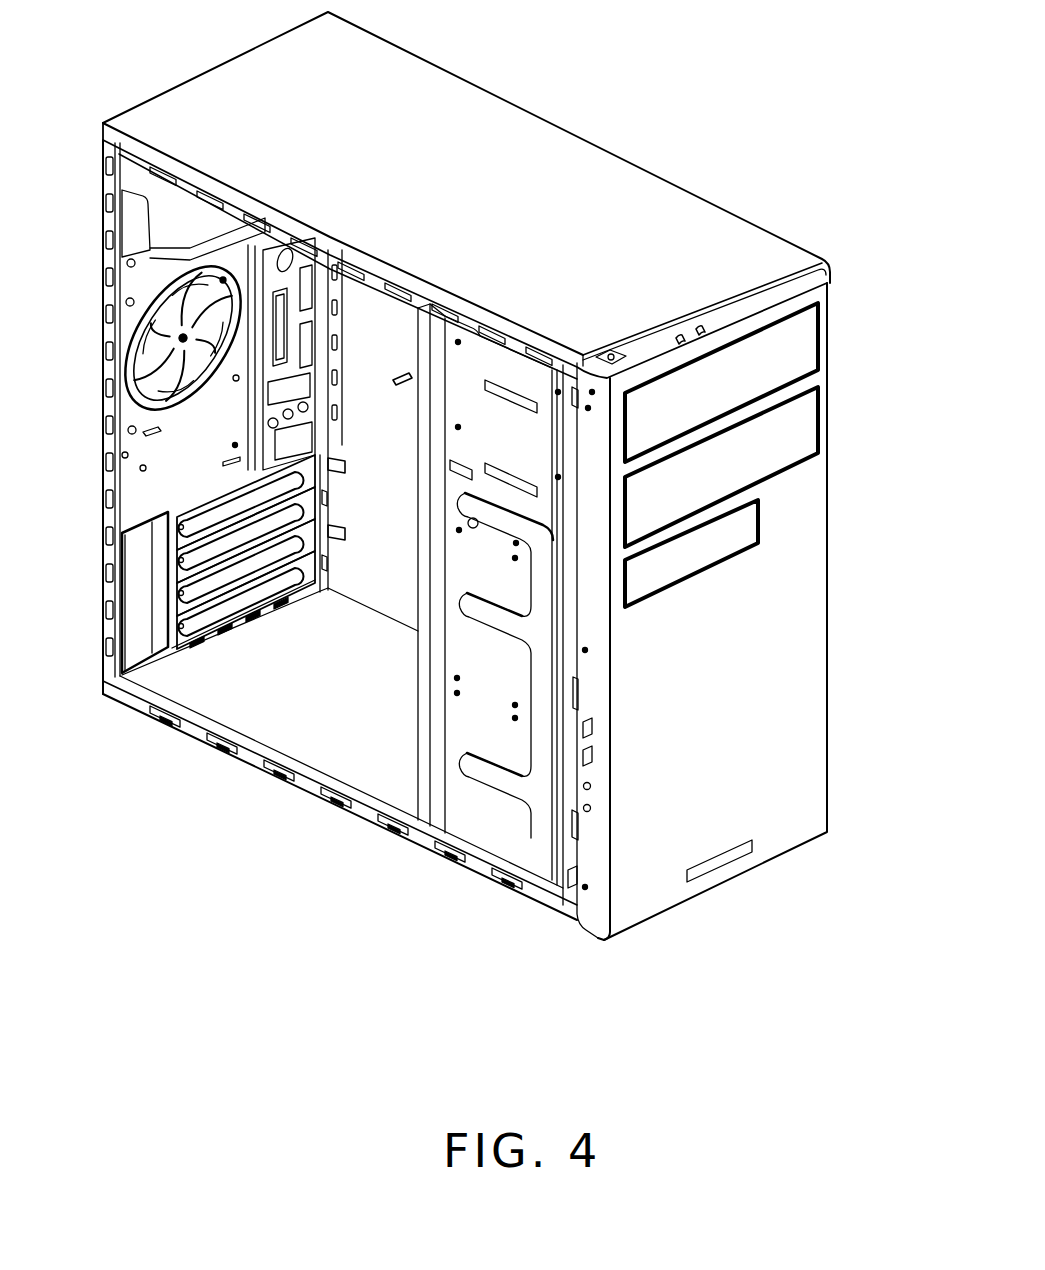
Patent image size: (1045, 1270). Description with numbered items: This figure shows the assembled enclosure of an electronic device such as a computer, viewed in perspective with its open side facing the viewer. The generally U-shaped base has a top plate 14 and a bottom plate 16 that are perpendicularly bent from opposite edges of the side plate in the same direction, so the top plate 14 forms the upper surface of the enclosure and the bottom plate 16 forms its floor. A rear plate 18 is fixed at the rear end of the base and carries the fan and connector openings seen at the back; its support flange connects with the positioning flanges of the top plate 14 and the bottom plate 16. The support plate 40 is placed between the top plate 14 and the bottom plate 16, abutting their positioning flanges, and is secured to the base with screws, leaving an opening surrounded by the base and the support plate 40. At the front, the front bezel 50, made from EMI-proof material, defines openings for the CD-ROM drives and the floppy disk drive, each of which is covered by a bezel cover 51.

The top plate 14 is at (540, 168).
The bottom plate 16 is at (247, 702).
The rear plate 18 is at (140, 510).
The support plate 40 is at (478, 818).
The front bezel 50 is at (785, 625).
The bezel cover 51 is at (795, 428).